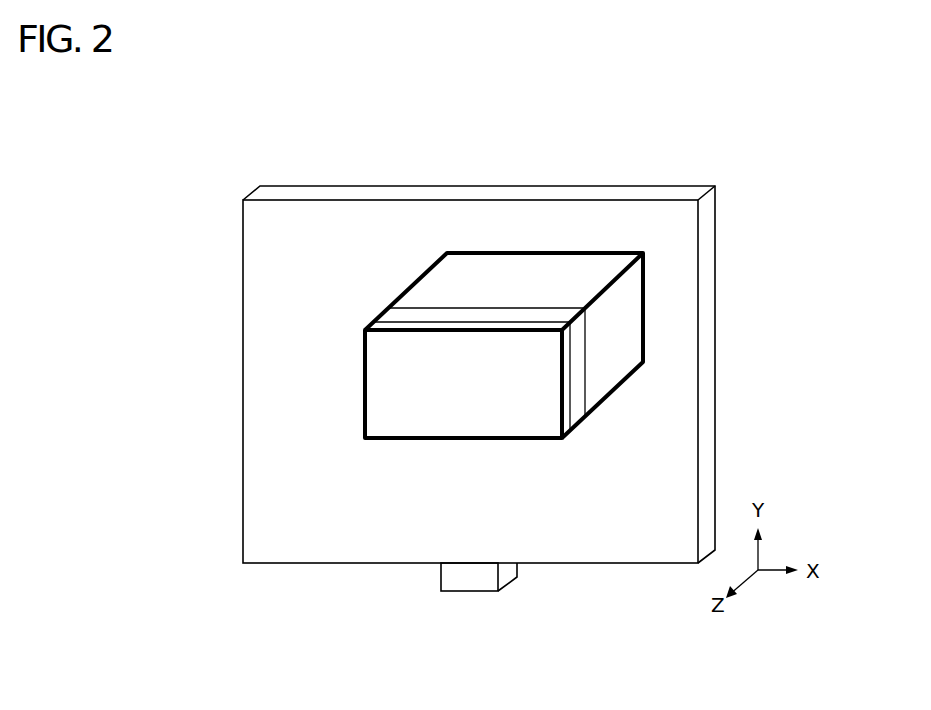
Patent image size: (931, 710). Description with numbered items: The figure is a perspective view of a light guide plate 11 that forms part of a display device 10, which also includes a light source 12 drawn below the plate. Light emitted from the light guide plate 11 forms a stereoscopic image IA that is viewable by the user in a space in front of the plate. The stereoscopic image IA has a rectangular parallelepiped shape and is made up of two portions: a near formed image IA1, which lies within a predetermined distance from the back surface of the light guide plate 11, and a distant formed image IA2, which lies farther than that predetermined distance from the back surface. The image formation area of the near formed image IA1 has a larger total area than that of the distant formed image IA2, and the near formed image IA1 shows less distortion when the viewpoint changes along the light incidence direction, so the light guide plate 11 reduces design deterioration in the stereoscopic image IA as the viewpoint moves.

The display device 10 is at (456, 386).
The light guide plate 11 is at (243, 478).
The light source 12 is at (470, 587).
The stereoscopic image IA is at (392, 345).
The near formed image IA1 is at (362, 383).
The distant formed image IA2 is at (428, 272).